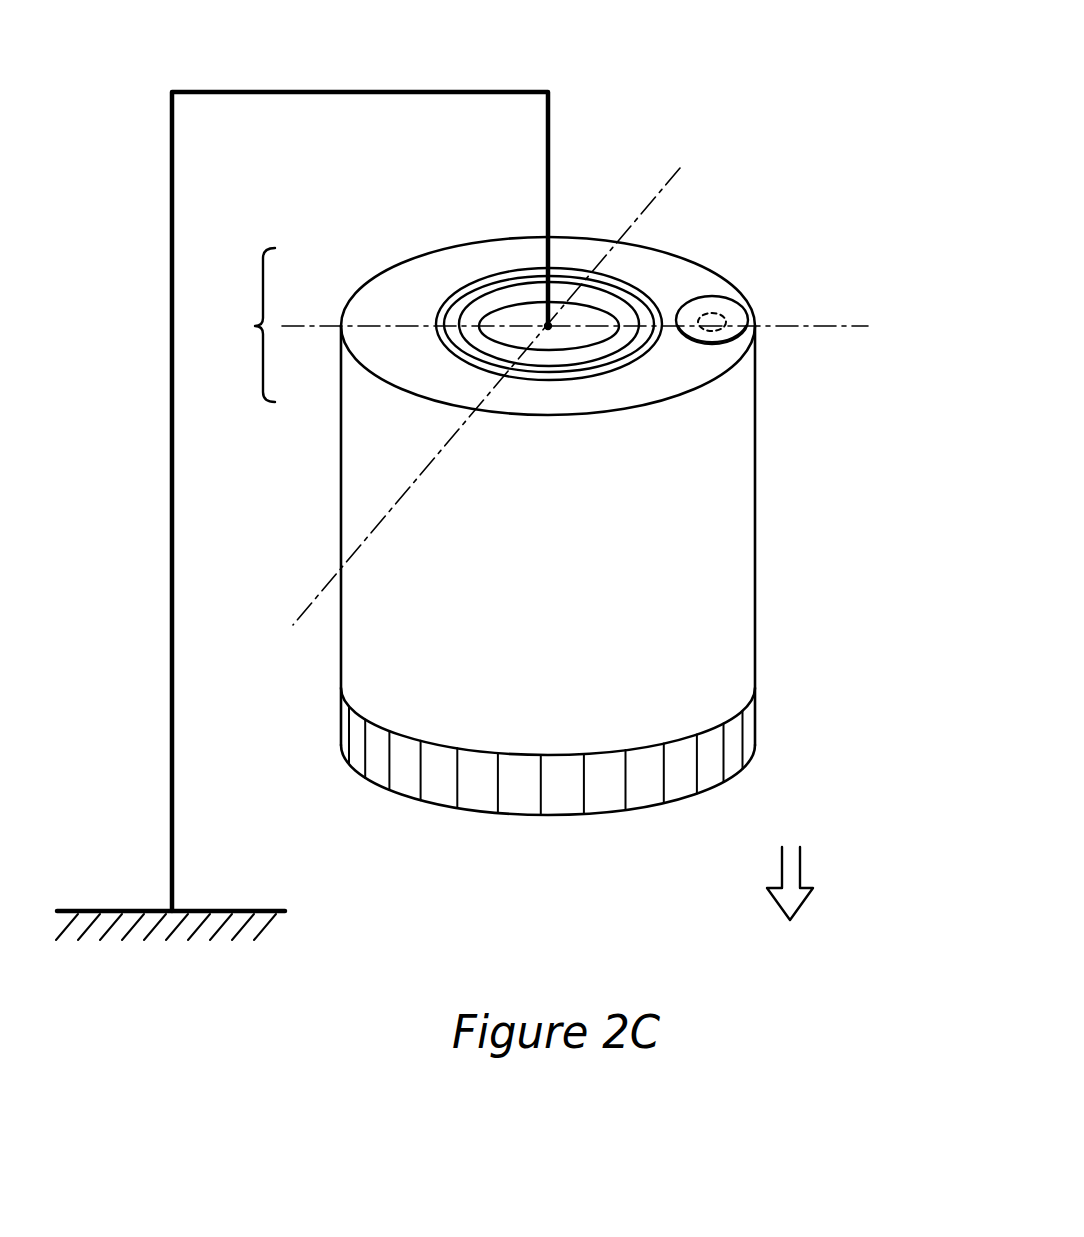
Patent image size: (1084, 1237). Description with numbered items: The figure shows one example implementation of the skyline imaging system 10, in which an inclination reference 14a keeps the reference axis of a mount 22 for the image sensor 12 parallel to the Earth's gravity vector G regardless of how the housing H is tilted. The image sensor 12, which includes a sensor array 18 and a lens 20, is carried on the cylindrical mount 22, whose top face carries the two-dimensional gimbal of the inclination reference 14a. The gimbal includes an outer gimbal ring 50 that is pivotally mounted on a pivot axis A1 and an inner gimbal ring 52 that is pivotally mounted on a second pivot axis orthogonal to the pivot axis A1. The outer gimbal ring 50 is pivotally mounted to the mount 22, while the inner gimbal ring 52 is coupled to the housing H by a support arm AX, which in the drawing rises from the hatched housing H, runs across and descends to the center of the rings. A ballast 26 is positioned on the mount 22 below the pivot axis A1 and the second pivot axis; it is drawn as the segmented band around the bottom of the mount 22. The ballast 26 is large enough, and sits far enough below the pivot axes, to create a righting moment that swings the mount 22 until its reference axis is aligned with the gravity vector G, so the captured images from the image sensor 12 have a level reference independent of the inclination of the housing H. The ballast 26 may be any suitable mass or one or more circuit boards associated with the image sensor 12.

The skyline imaging system 10 is at (785, 80).
The image sensor 12 is at (700, 300).
The inclination reference 14a is at (252, 326).
The sensor array 18 is at (742, 332).
The lens 20 is at (725, 317).
The mount 22 is at (757, 470).
The ballast 26 is at (740, 735).
The outer gimbal ring 50 is at (625, 355).
The inner gimbal ring 52 is at (523, 317).
The support arm AX is at (450, 92).
The pivot axis A1 is at (842, 323).
The Earth's gravity vector G is at (793, 862).
The housing H is at (250, 915).